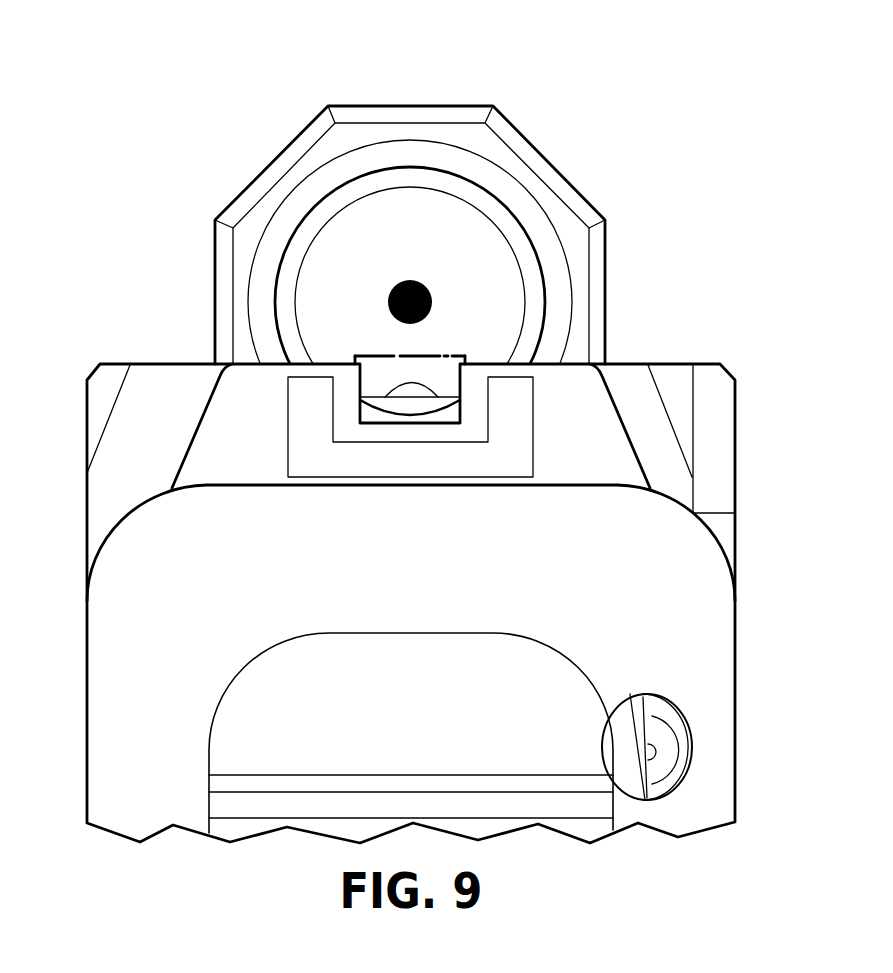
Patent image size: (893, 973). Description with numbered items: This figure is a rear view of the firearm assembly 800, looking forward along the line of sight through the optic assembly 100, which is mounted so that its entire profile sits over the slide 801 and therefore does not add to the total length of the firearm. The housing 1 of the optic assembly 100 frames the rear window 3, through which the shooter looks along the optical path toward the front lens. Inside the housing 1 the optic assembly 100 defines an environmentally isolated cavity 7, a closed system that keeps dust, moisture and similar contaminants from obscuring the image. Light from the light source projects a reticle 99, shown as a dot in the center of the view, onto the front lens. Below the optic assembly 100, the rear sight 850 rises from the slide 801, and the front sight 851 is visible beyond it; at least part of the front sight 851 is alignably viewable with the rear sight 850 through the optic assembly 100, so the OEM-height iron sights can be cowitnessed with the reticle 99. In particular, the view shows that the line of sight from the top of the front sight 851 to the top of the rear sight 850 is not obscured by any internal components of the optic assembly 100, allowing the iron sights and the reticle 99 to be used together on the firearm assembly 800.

The firearm assembly 800 is at (170, 104).
The optic assembly 100 is at (533, 137).
The housing 1 is at (550, 162).
The rear window 3 is at (545, 303).
The environmentally isolated cavity 7 is at (400, 251).
The reticle 99 is at (402, 285).
The slide 801 is at (390, 587).
The rear sight 850 is at (478, 363).
The front sight 851 is at (408, 355).